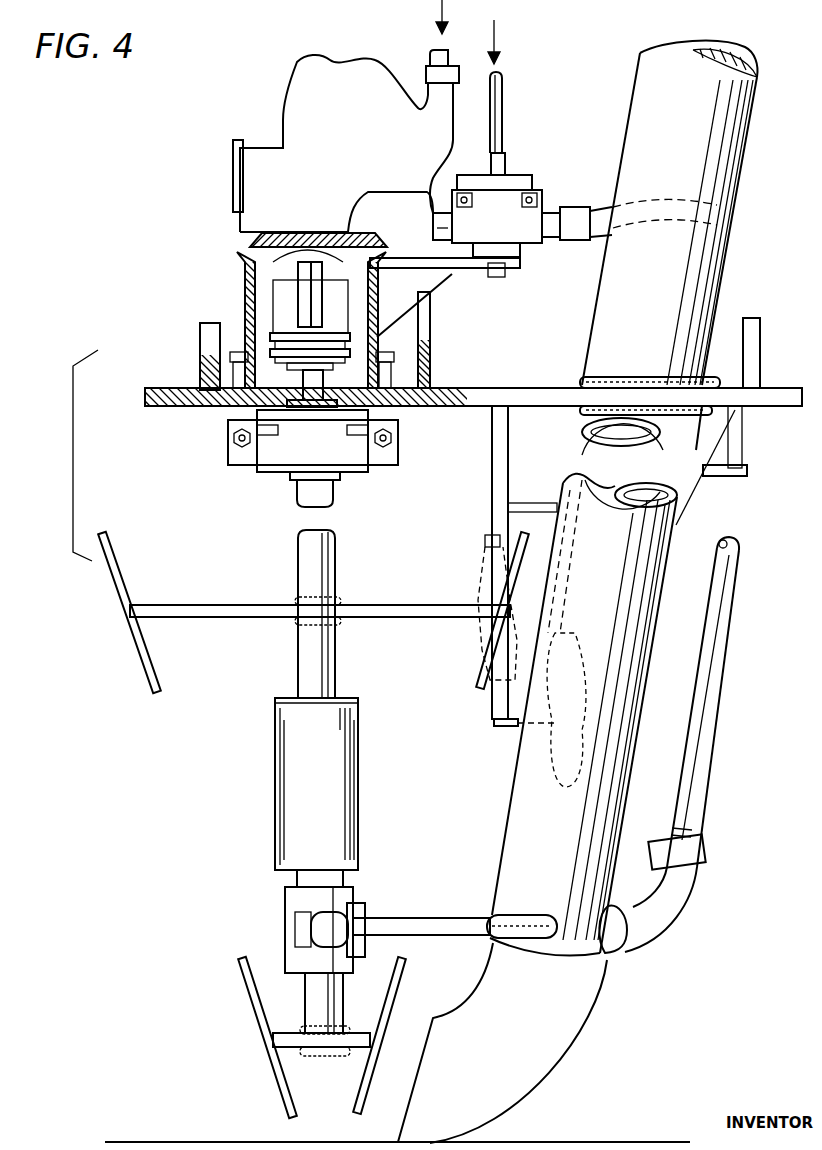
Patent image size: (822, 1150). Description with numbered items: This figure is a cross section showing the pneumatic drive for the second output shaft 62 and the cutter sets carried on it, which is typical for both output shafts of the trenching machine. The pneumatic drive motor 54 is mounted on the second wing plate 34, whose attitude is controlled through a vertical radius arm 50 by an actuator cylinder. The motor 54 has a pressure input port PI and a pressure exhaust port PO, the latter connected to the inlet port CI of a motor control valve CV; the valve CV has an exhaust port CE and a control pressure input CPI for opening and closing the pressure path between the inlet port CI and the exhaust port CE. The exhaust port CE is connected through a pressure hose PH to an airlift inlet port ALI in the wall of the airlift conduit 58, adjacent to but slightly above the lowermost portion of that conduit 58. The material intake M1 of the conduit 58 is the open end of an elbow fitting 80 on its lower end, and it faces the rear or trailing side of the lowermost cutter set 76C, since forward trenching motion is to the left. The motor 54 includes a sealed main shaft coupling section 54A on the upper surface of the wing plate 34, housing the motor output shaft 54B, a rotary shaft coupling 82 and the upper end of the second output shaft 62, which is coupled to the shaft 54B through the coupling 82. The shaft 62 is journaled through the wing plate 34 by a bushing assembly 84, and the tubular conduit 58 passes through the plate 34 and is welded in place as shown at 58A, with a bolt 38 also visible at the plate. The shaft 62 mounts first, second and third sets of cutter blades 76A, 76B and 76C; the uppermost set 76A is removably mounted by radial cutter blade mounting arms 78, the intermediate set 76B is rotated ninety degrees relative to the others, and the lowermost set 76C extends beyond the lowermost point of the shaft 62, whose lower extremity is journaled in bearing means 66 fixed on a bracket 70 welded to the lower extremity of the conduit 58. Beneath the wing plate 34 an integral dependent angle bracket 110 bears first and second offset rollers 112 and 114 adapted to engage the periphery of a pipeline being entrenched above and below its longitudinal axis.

The wing plate 34 is at (157, 392).
The bolt 38 is at (208, 338).
The vertical radius arm 50 is at (430, 332).
The pneumatic motor 54 is at (358, 155).
The sealed main shaft coupling section 54A is at (240, 282).
The motor output shaft 54B is at (310, 298).
The airlift conduit 58 is at (680, 152).
The weld 58A is at (590, 376).
The second output shaft 62 is at (312, 380).
The bearing means 66 is at (293, 903).
The bracket 70 is at (425, 918).
The first set of cutter blades 76A is at (122, 604).
The second set of cutter blades 76B is at (335, 770).
The third set of cutter blades 76C is at (256, 1011).
The radial cutter blade mounting arms 78 is at (293, 625).
The elbow fitting 80 is at (510, 1048).
The rotary shaft coupling 82 is at (282, 367).
The bushing assembly 84 is at (324, 449).
The angle bracket 110 is at (520, 517).
The first offset roller 112 is at (486, 572).
The second offset roller 114 is at (577, 688).
The pressure input port PI is at (424, 50).
The control pressure input CPI is at (503, 96).
The inlet port CI is at (446, 212).
The exhaust port CE is at (553, 210).
The pressure exhaust port PO is at (400, 197).
The motor control valve CV is at (510, 231).
The pressure hose PH is at (706, 705).
The airlift inlet port ALI is at (618, 938).
The material intake M1 is at (405, 1093).